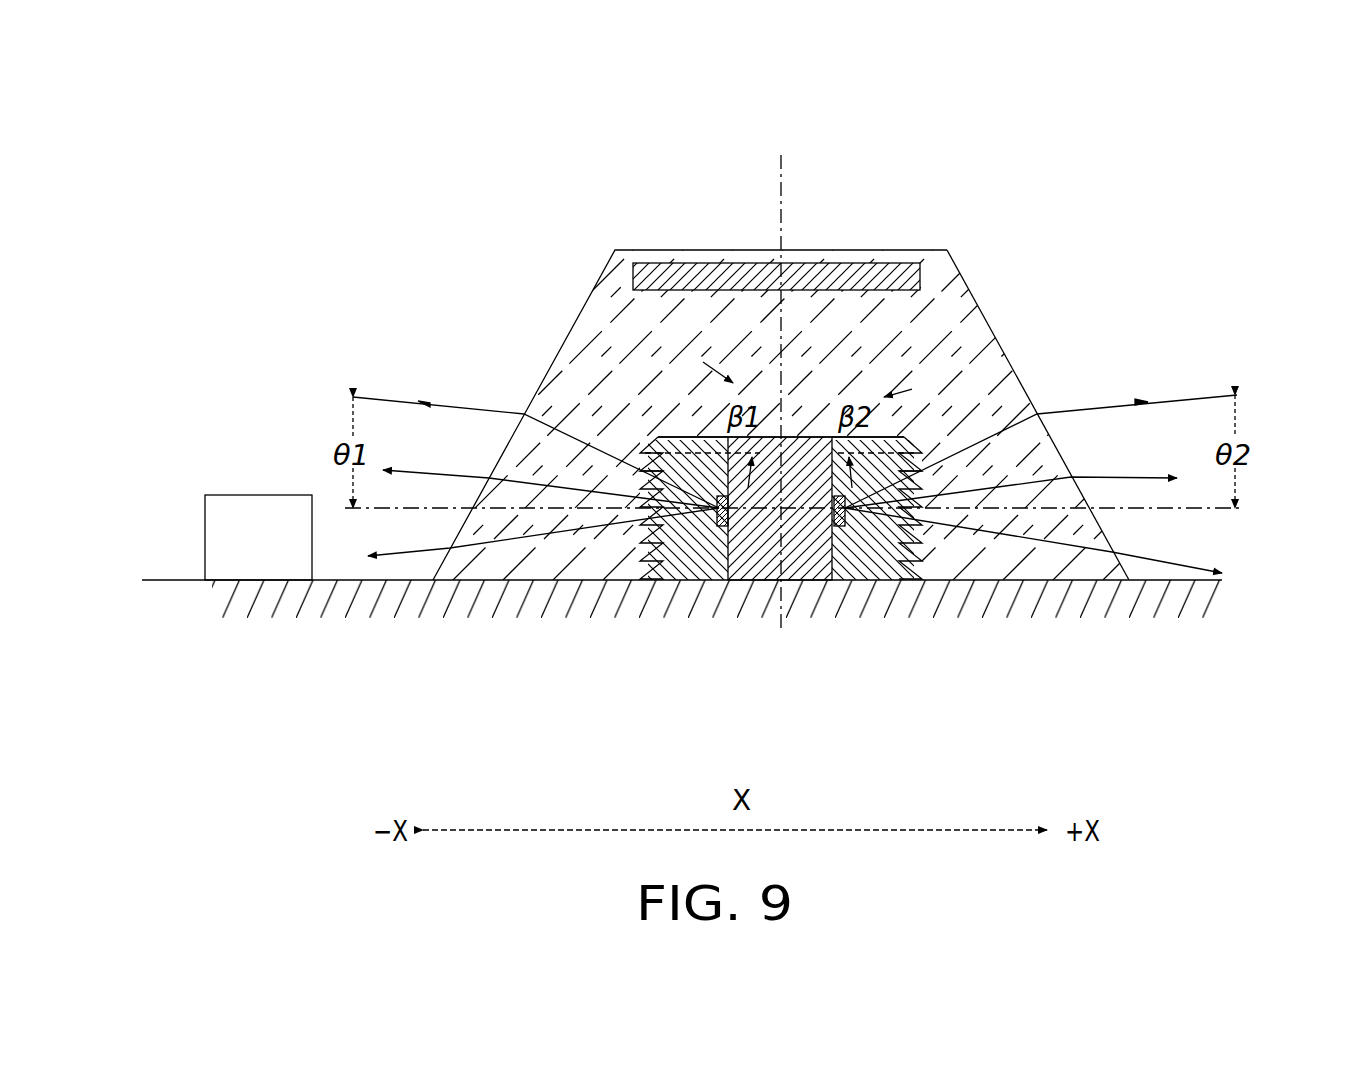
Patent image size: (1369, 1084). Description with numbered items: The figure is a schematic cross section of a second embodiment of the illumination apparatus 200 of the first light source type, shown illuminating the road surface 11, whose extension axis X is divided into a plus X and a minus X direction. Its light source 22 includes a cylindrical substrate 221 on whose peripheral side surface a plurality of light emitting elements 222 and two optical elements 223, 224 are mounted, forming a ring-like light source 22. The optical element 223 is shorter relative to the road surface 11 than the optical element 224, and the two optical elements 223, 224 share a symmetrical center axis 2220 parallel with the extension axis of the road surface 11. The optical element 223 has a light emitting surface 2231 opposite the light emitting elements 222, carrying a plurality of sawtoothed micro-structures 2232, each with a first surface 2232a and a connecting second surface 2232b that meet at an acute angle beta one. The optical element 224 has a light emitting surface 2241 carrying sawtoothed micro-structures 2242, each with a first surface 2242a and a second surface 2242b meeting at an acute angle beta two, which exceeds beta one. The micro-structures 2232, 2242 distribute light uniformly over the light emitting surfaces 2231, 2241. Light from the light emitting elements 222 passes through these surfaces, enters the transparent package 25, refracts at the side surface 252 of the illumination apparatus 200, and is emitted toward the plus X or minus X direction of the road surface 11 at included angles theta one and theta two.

The illumination apparatus 200 is at (585, 190).
The transparent package 25 is at (607, 325).
The side surface 252 is at (952, 308).
The road surface 11 is at (183, 580).
The light source 22 is at (872, 700).
The substrate 221 is at (757, 580).
The light emitting elements 222 is at (721, 527).
The optical element 223 is at (677, 577).
The optical element 224 is at (858, 580).
The light emitting surface 2231 is at (643, 578).
The light emitting surface 2241 is at (923, 582).
The micro-structures 2232 is at (393, 283).
The first surface 2232a is at (655, 440).
The second surface 2232b is at (648, 466).
The micro-structures 2242 is at (1163, 273).
The first surface 2242a is at (907, 430).
The second surface 2242b is at (927, 460).
The symmetrical center axis 2220 is at (1192, 510).